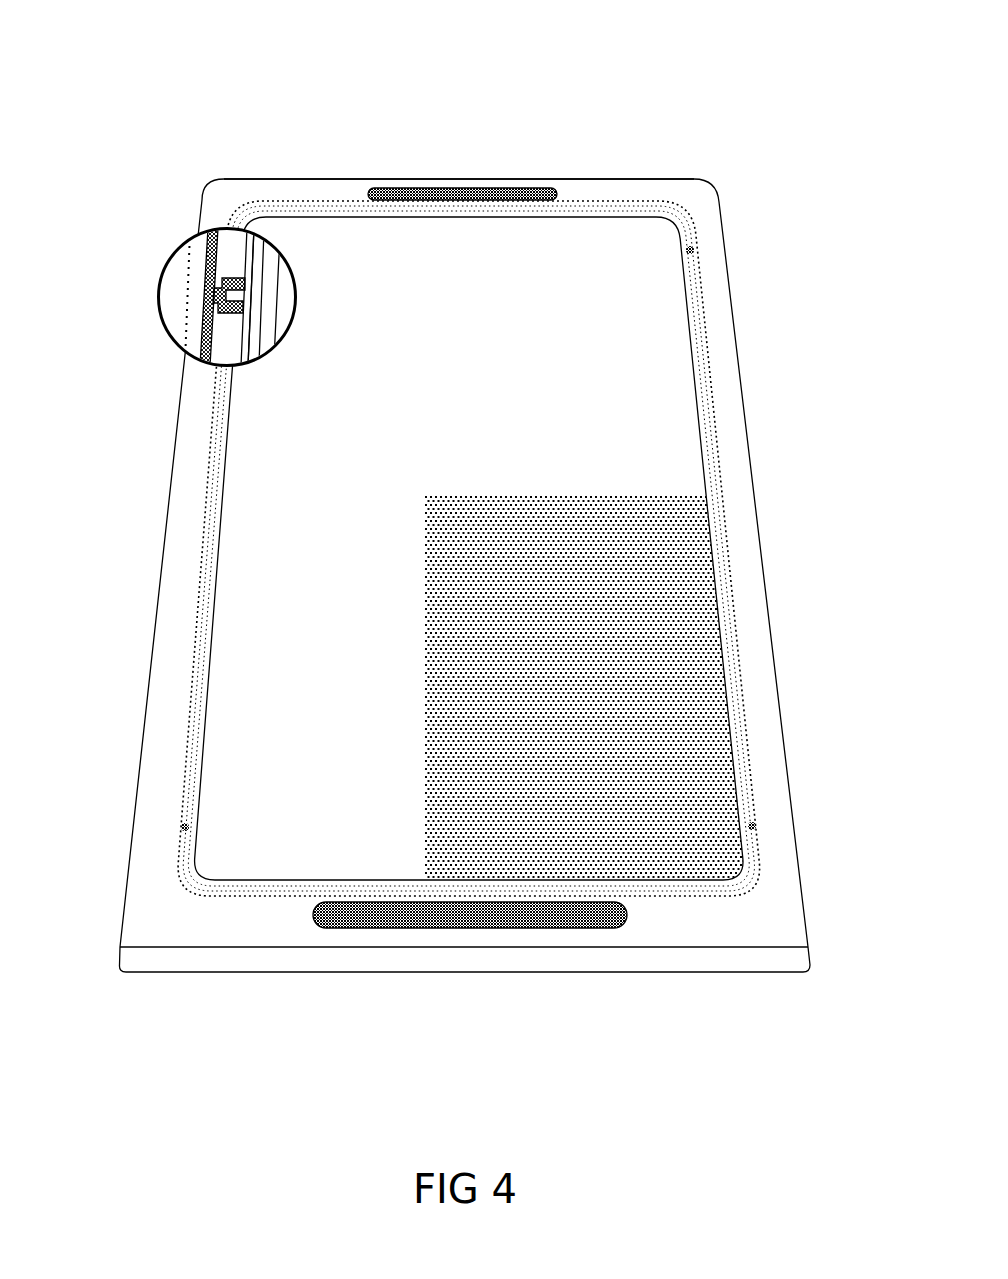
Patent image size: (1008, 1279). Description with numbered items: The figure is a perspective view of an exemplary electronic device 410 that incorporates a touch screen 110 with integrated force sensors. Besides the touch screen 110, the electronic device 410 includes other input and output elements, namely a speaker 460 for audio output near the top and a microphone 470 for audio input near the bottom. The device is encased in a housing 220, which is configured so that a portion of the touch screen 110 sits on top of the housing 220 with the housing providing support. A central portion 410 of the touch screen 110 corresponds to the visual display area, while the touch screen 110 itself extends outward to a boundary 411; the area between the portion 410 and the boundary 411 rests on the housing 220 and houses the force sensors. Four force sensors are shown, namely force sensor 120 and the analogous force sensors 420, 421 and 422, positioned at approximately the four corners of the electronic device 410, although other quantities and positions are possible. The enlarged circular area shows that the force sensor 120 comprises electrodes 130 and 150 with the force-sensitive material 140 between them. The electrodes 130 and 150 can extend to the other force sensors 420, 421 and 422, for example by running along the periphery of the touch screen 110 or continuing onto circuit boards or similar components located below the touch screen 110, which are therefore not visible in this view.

The touch screen 110 is at (718, 425).
The force sensor 120 is at (170, 250).
The electrode 130 is at (203, 343).
The force-sensitive material 140 is at (236, 279).
The electrode 150 is at (253, 357).
The housing 220 is at (613, 179).
The electronic device 410 is at (746, 93).
The boundary 411 is at (731, 577).
The force sensor 420 is at (692, 251).
The force sensor 421 is at (752, 826).
The force sensor 422 is at (185, 827).
The speaker 460 is at (393, 194).
The microphone 470 is at (583, 922).